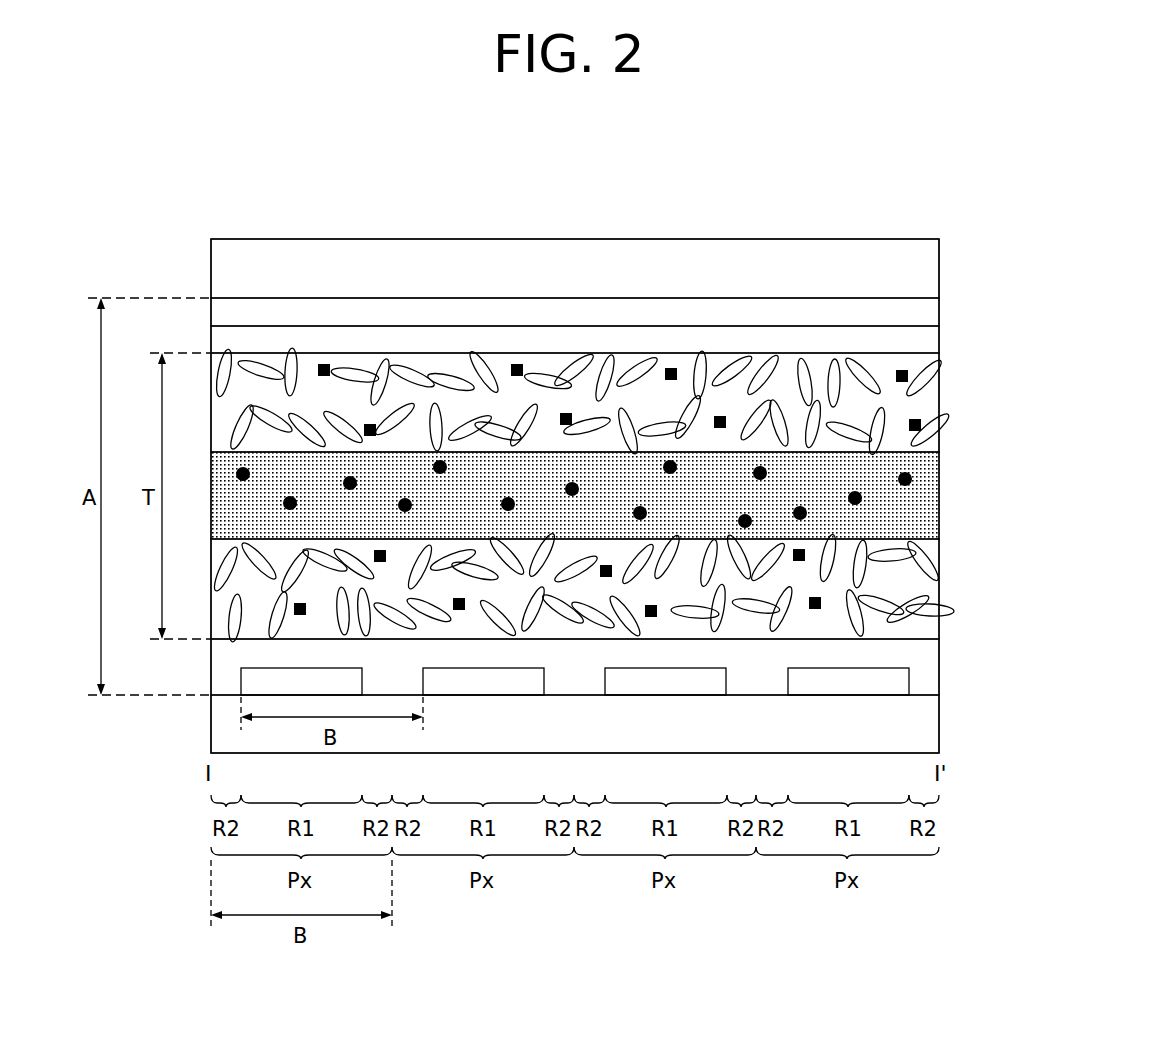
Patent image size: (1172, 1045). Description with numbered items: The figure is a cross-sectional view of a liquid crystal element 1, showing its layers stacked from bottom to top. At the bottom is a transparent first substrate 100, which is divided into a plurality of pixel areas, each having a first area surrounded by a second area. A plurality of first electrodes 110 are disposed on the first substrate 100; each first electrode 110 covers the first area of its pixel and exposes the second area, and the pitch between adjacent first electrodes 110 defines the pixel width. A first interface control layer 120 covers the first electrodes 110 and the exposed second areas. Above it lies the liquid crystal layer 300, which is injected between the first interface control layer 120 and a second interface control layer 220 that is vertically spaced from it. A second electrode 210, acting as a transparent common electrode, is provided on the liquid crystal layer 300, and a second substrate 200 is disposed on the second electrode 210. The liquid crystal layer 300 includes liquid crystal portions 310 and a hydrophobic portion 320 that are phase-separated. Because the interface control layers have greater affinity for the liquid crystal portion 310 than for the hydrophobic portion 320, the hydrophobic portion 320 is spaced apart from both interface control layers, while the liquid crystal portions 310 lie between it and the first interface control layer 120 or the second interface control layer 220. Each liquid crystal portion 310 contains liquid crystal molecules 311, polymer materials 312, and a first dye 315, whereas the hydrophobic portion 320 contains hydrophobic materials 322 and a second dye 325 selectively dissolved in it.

The liquid crystal element 1 is at (1036, 161).
The first substrate 100 is at (928, 722).
The first electrode 110 is at (893, 683).
The first interface control layer 120 is at (928, 657).
The second substrate 200 is at (928, 271).
The second electrode 210 is at (928, 309).
The second interface control layer 220 is at (928, 336).
The liquid crystal layer 300 is at (684, 495).
The liquid crystal portion 310 is at (651, 495).
The liquid crystal molecules 311 is at (920, 433).
The polymer materials 312 is at (918, 399).
The first dye 315 is at (912, 391).
The hydrophobic portion 320 is at (651, 495).
The hydrophobic materials 322 is at (925, 513).
The second dye 325 is at (910, 480).